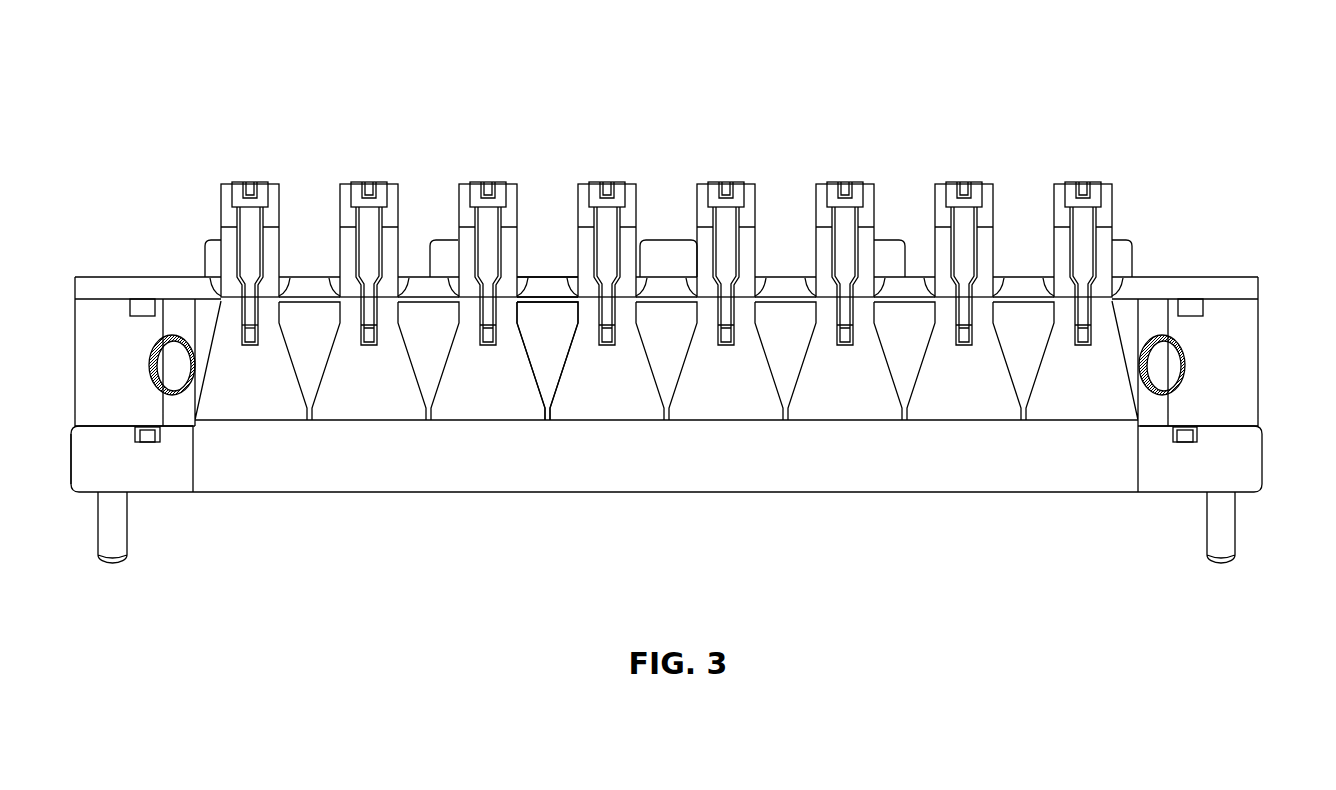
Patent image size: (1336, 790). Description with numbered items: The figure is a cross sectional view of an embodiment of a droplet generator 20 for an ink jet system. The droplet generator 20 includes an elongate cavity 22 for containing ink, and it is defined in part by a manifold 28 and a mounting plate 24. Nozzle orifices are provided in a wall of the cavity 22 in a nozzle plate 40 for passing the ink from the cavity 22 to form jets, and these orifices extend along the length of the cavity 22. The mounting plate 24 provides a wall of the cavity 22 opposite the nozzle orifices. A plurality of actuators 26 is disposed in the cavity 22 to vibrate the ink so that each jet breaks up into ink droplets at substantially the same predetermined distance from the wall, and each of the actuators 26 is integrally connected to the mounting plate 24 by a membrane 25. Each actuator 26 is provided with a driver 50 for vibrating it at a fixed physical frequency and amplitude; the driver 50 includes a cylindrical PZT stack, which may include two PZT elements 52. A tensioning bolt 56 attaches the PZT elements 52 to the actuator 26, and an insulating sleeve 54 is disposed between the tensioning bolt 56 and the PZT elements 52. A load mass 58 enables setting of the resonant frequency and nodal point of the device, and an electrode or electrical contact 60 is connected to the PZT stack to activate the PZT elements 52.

The electrical connector 20 is at (1034, 114).
The elongate cavity 22 is at (695, 470).
The mounting plate 24 is at (85, 283).
The membrane 25 is at (578, 297).
The actuators 26 is at (503, 387).
The manifold 28 is at (550, 345).
The nozzle plate 40 is at (1243, 460).
The driver 50 is at (278, 197).
The PZT elements 52 is at (267, 217).
The insulating sleeve 54 is at (238, 218).
The tensioning bolt 56 is at (248, 184).
The load mass 58 is at (230, 187).
The electrical contact 60 is at (278, 227).